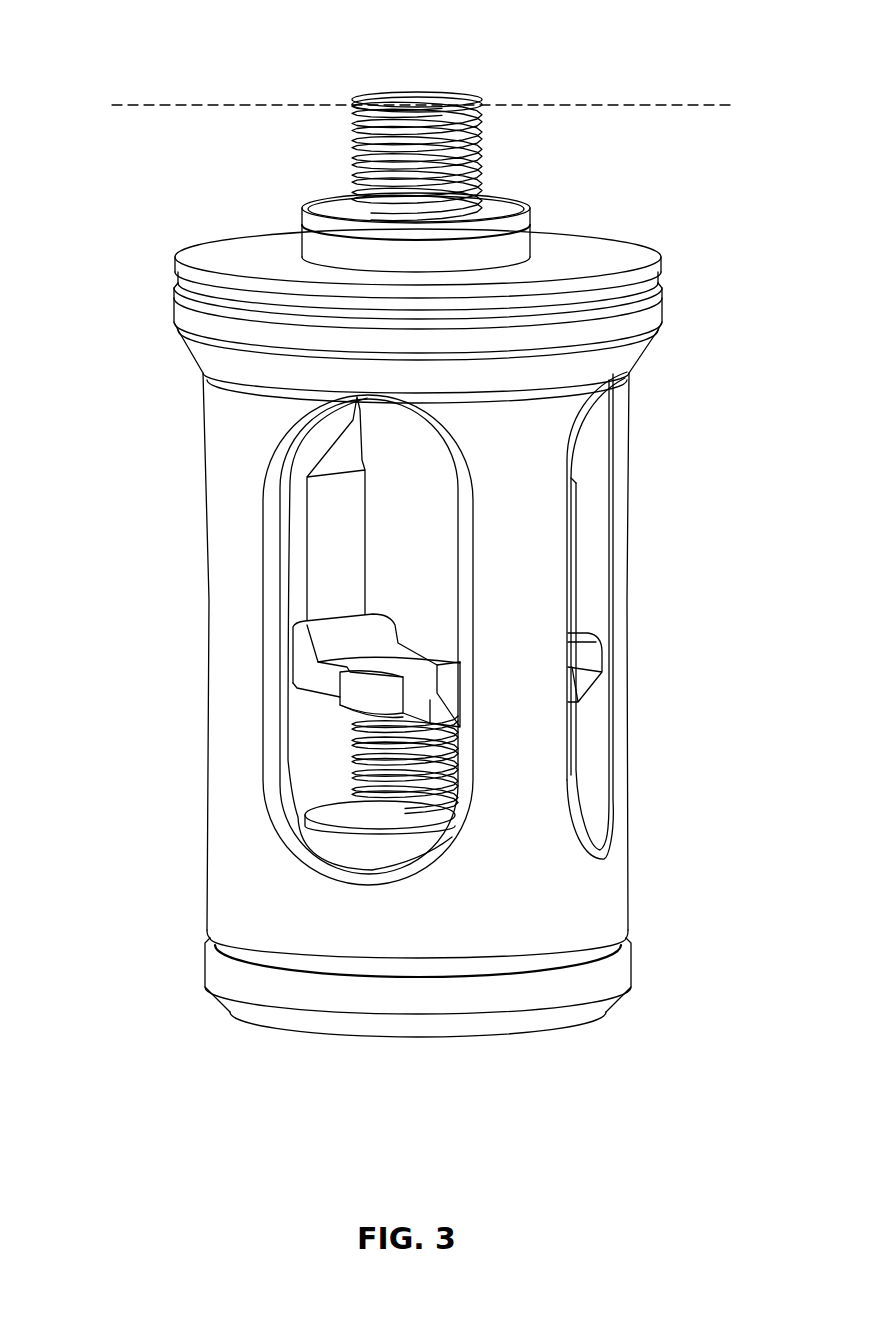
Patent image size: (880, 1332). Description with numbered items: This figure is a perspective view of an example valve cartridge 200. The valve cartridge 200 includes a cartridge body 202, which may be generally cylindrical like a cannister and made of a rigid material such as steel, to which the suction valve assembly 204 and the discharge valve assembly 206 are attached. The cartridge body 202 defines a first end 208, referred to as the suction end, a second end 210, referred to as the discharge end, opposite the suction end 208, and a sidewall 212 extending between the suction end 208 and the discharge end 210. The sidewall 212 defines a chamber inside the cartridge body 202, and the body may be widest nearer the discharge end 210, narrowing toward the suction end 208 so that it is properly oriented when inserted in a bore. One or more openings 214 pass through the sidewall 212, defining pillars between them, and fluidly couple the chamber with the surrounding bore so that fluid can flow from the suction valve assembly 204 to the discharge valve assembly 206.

The valve cartridge 200 is at (137, 27).
The cartridge body 202 is at (208, 357).
The suction valve assembly 204 is at (431, 617).
The discharge valve assembly 206 is at (328, 158).
The first end 208 is at (477, 1038).
The second end 210 is at (596, 242).
The sidewall 212 is at (232, 583).
The openings 214 is at (465, 530).